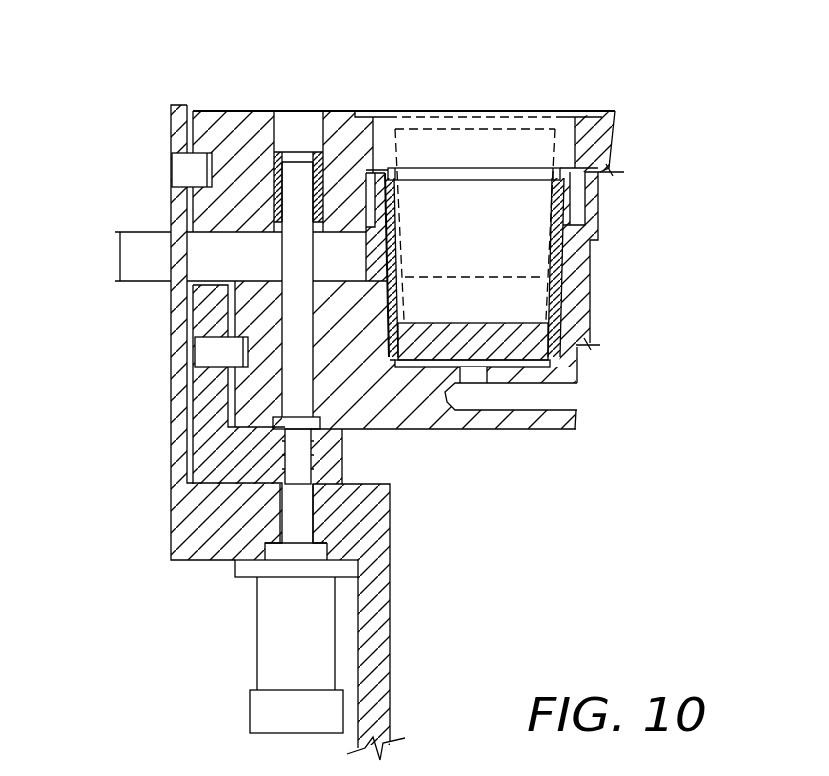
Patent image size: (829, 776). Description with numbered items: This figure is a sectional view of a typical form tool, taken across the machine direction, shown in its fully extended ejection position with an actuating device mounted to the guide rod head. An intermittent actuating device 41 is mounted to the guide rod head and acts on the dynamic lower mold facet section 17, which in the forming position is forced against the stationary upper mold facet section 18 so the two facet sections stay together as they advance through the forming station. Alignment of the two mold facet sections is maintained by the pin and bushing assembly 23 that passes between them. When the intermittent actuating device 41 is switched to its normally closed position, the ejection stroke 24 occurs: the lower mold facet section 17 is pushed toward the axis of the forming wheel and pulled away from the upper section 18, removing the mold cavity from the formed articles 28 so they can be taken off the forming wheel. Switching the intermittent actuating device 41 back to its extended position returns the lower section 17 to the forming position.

The dynamic lower mold facet section 17 is at (440, 432).
The stationary upper mold facet section 18 is at (204, 111).
The pin and bushing assembly 23 is at (295, 160).
The ejection stroke 24 is at (118, 246).
The formed articles 28 is at (453, 115).
The intermittent actuating device 41 is at (257, 634).